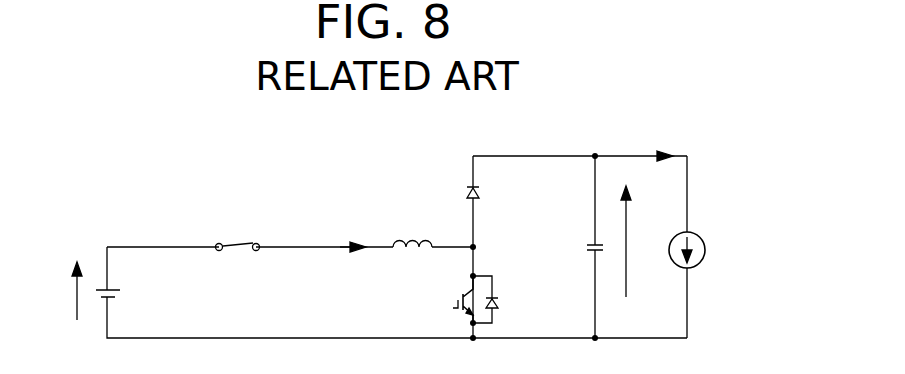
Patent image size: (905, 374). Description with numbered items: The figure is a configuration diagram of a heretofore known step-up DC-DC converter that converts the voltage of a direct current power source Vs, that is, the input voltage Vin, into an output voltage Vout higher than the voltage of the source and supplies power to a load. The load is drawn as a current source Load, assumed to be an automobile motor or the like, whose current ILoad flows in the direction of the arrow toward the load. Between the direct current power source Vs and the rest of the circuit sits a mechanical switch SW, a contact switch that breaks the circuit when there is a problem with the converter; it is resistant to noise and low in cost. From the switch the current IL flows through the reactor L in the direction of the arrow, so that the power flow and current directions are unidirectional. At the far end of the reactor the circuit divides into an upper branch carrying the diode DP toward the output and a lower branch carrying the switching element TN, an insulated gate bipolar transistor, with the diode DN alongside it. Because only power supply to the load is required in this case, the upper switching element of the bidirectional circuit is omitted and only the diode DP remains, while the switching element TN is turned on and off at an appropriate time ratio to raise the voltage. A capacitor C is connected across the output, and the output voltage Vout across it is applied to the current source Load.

The direct current power source Vs is at (121, 293).
The input voltage Vin is at (54, 291).
The mechanical switch SW is at (238, 265).
The current of reactor IL is at (347, 231).
The reactor L is at (412, 229).
The diode DP is at (494, 195).
The switching element TN is at (445, 299).
The diode DN is at (501, 299).
The capacitor C is at (581, 249).
The output voltage Vout is at (630, 254).
The current of current source Load ILoad is at (644, 137).
The current source Load is at (717, 250).